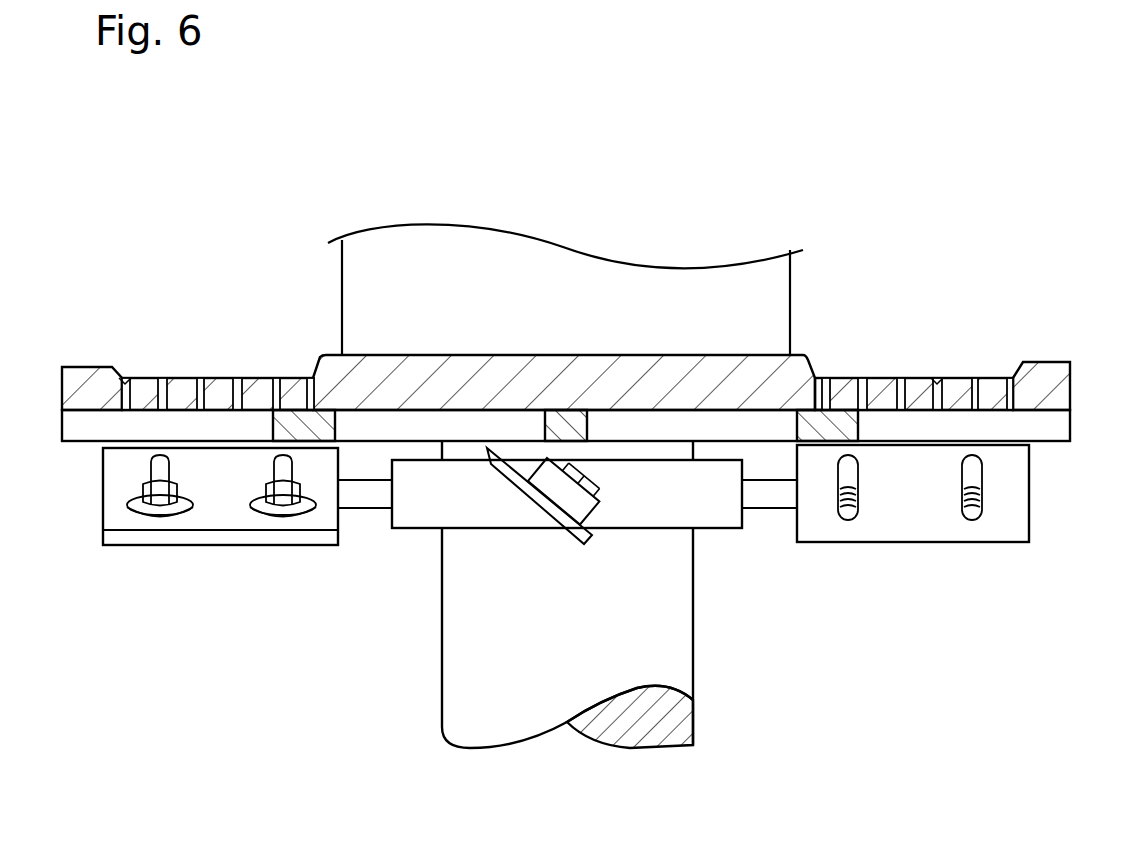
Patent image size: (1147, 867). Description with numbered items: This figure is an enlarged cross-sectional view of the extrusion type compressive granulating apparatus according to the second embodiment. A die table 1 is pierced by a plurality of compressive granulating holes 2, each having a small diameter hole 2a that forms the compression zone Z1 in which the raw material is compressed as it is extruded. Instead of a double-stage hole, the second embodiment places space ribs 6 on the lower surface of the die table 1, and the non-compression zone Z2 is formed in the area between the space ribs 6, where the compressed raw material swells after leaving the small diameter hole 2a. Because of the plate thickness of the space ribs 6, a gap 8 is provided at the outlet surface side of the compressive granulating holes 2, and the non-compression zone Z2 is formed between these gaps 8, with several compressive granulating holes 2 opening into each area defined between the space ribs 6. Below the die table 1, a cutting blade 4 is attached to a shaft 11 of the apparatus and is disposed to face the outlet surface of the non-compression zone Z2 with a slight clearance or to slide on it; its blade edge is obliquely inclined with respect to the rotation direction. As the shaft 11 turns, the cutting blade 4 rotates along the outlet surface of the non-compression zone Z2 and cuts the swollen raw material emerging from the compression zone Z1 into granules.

The die table 1 is at (566, 298).
The compressive granulating hole 2 is at (567, 298).
The small diameter hole 2a is at (858, 378).
The cutting blade 4 is at (220, 470).
The space rib 6 is at (563, 422).
The gap 8 is at (106, 431).
The shaft 11 is at (665, 660).
The compression zone Z1 is at (125, 372).
The non-compression zone Z2 is at (587, 526).